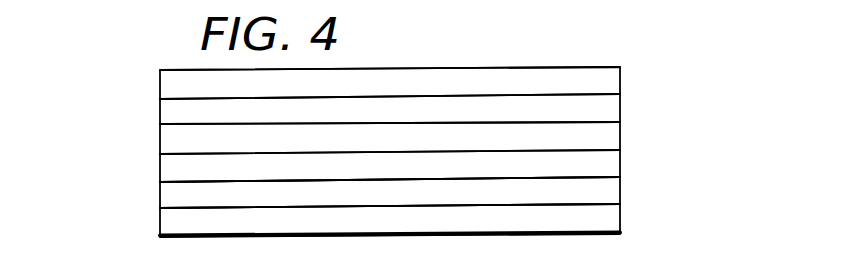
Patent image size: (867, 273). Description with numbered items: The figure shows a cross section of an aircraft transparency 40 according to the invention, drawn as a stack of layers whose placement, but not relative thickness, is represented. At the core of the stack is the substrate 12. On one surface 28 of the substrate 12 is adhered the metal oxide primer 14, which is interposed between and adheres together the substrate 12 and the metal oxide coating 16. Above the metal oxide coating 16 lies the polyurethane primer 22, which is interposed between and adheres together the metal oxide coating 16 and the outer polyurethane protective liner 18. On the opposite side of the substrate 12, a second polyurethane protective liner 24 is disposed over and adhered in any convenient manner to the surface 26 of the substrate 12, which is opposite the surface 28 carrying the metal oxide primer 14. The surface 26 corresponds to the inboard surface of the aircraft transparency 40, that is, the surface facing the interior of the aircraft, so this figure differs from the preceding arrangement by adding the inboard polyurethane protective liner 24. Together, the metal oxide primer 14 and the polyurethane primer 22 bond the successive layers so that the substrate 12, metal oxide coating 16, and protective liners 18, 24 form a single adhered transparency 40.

The aircraft transparency 40 is at (647, 92).
The polyurethane protective liner 18 is at (160, 82).
The polyurethane primer 22 is at (160, 108).
The metal oxide coating 16 is at (160, 133).
The metal oxide primer 14 is at (160, 163).
The substrate 12 is at (160, 195).
The polyurethane protective liner 24 is at (160, 225).
The surface 28 is at (620, 177).
The surface 26 is at (620, 204).